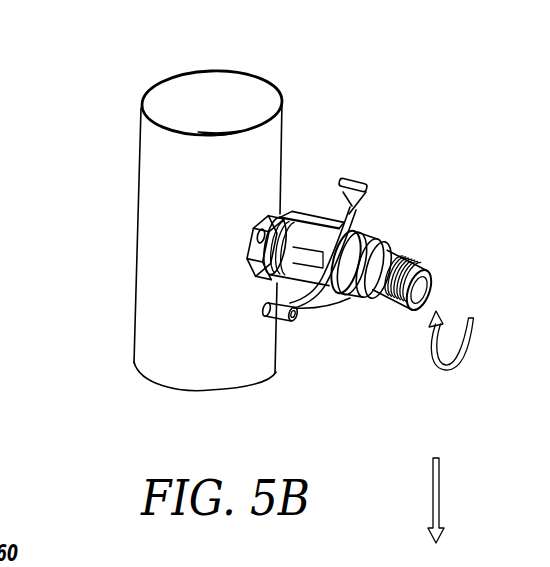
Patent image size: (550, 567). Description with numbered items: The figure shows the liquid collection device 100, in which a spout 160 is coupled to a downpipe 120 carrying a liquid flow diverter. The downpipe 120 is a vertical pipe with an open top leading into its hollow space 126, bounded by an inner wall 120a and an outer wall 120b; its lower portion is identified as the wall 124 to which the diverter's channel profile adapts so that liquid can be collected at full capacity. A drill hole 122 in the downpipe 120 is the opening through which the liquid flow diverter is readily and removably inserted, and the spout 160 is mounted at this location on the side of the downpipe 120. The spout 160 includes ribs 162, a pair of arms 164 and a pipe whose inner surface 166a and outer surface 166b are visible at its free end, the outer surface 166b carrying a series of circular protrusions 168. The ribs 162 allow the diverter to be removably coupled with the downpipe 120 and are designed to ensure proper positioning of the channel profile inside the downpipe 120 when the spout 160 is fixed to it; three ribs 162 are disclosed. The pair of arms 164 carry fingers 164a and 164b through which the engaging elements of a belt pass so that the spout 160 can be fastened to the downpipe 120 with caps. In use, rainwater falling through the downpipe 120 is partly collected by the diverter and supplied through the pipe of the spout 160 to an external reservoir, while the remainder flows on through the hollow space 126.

The liquid collection device 100 is at (108, 102).
The downpipe 120 is at (214, 409).
The inner wall 120a is at (187, 98).
The outer wall 120b is at (157, 186).
The drill hole 122 is at (257, 283).
The wall 124 is at (174, 370).
The hollow space 126 is at (163, 108).
The spout 160 is at (412, 226).
The ribs 162 is at (319, 207).
The pair of arms 164 is at (376, 204).
The finger 164a is at (356, 181).
The finger 164b is at (282, 322).
The inner surface 166a is at (428, 296).
The outer surface 166b is at (374, 291).
The circular protrusions 168 is at (424, 256).